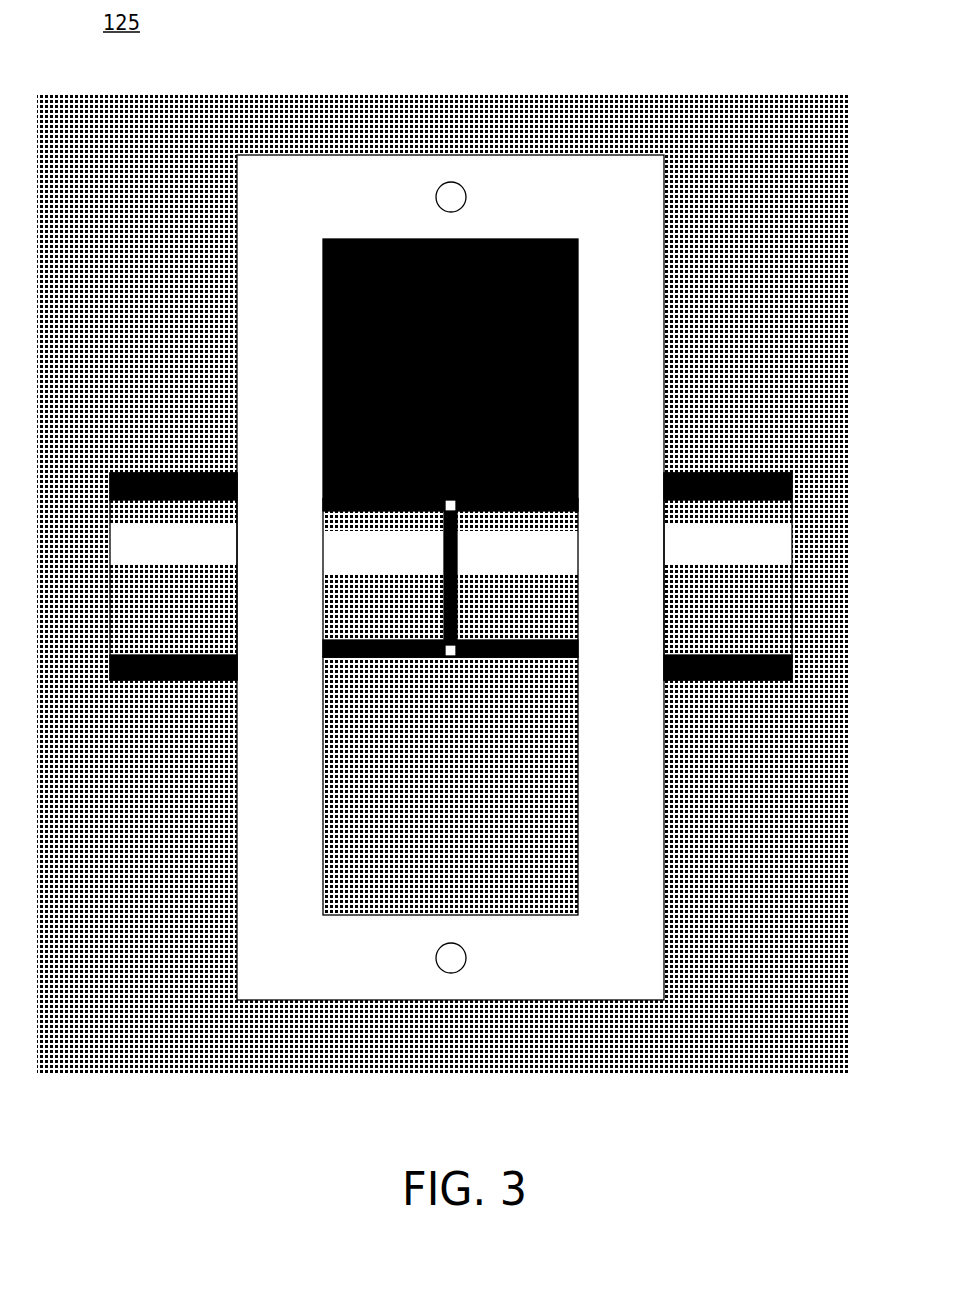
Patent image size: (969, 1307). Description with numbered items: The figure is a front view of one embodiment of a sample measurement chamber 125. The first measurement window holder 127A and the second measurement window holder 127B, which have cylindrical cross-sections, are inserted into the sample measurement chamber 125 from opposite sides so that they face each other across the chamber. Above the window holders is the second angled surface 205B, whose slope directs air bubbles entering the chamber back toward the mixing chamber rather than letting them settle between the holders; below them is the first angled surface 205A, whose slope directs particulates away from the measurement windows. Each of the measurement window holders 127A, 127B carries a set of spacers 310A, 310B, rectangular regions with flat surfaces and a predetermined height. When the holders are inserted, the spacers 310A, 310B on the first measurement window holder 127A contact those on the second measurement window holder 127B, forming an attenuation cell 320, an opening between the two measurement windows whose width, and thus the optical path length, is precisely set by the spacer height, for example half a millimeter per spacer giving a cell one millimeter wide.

The sample measurement chamber 125 is at (350, 1000).
The first measurement window holder 127A is at (192, 477).
The second measurement window holder 127B is at (732, 463).
The first angled surface 205A is at (522, 899).
The second angled surface 205B is at (382, 254).
The spacer 310A is at (447, 489).
The spacer 310B is at (450, 665).
The attenuation cell 320 is at (447, 595).